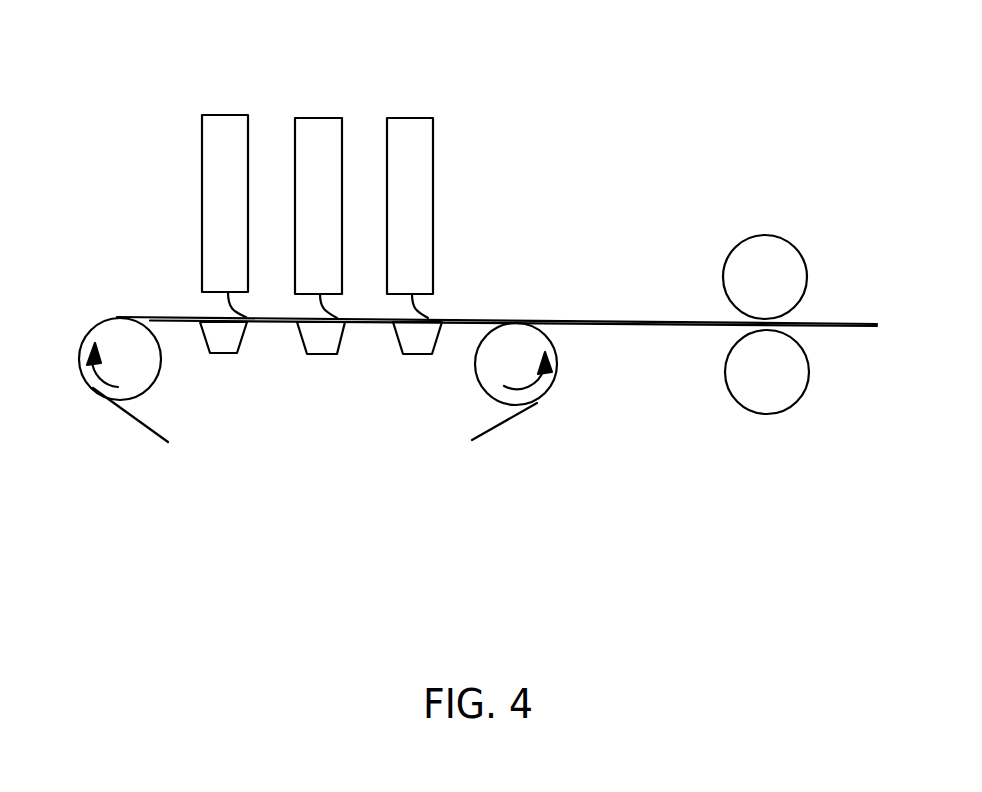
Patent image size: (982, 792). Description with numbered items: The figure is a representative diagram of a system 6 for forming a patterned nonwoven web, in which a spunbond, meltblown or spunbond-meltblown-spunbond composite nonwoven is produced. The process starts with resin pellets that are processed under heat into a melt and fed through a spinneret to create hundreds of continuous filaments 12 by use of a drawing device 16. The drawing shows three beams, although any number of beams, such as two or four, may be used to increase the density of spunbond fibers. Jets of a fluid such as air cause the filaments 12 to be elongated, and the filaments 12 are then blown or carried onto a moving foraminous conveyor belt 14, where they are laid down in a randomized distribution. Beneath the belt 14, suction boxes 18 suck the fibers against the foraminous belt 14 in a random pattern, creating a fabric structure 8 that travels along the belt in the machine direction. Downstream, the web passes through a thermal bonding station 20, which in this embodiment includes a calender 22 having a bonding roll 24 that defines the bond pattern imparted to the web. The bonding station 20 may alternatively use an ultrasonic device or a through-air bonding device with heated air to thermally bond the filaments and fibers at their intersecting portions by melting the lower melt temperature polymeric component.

The system for forming a patterned nonwoven web 6 is at (520, 480).
The fabric structure 8 is at (592, 318).
The continuous filaments 12 is at (227, 298).
The moving conveyor belt 14 is at (152, 318).
The drawing device 16 is at (170, 112).
The suction boxes 18 is at (408, 355).
The thermal bonding station 20 is at (751, 186).
The calender 22 is at (748, 393).
The bonding roll 24 is at (773, 268).